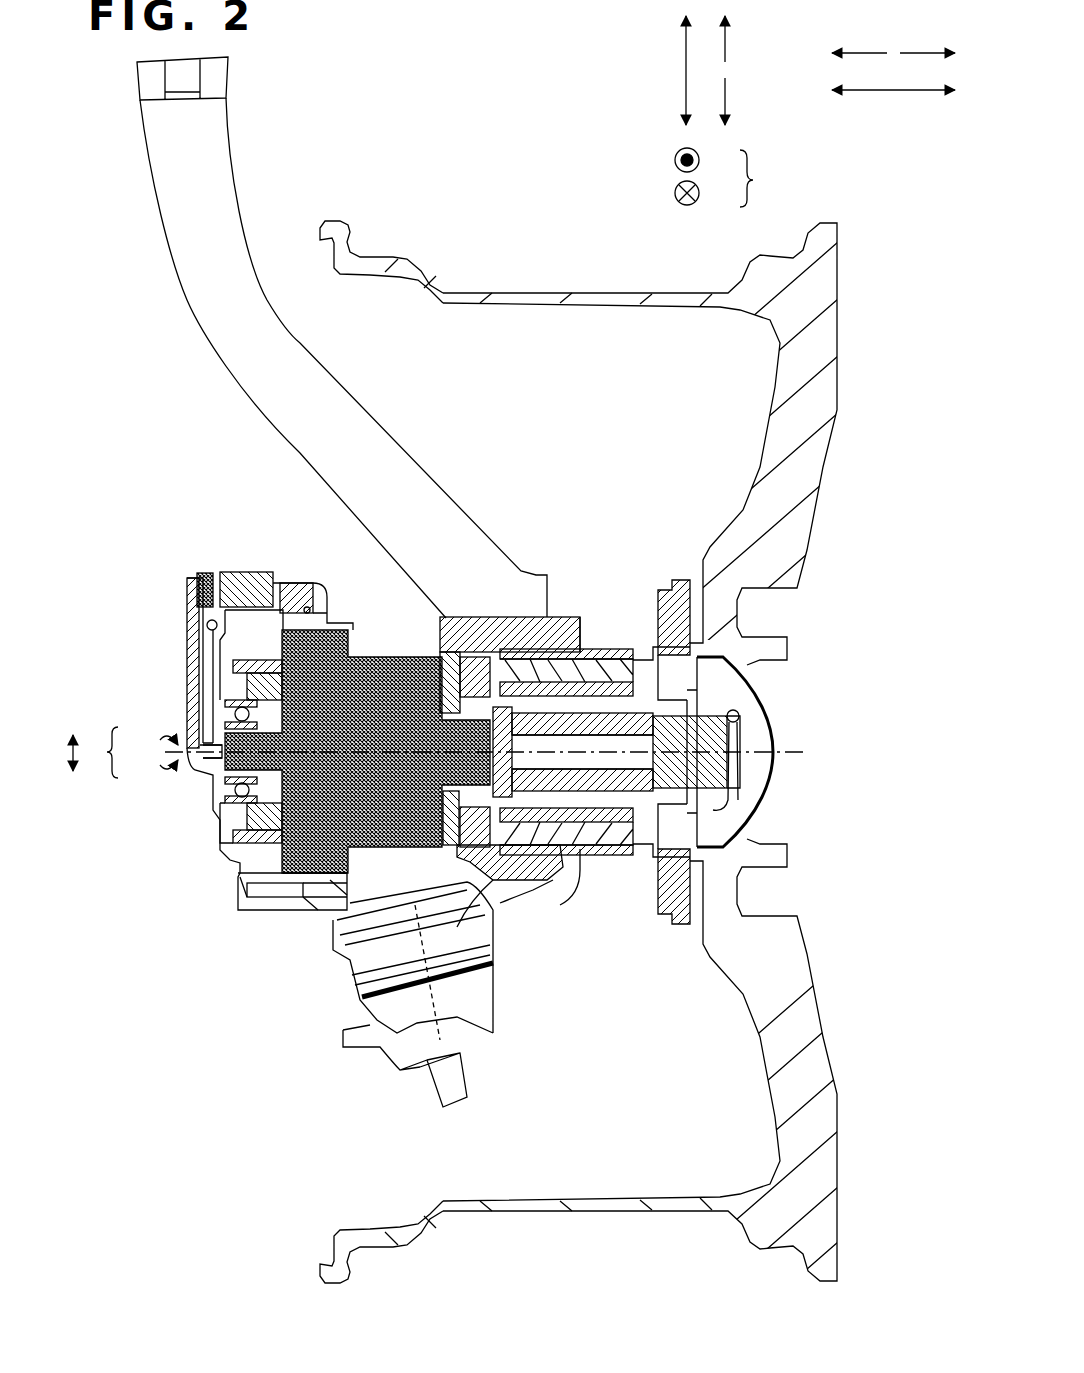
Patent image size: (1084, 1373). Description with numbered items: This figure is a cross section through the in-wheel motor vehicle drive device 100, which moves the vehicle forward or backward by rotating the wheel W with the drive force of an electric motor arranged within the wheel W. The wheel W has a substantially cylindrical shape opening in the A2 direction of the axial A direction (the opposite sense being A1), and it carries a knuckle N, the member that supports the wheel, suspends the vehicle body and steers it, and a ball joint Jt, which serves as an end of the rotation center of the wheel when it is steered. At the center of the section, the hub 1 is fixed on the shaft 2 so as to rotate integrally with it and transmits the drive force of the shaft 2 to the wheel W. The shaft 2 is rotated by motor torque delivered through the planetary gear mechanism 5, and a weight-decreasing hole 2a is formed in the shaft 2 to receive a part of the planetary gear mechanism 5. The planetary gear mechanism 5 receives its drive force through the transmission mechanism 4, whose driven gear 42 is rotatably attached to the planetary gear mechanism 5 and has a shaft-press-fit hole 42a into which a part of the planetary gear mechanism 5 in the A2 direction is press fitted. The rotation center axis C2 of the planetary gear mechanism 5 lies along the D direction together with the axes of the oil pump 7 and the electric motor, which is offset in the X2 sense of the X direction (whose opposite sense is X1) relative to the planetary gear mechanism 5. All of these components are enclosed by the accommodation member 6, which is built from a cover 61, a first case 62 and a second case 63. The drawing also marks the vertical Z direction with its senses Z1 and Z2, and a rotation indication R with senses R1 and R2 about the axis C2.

The in-wheel motor vehicle drive device 100 is at (150, 560).
The hub 1 is at (690, 677).
The shaft 2 is at (750, 723).
The weight-decreasing hole 2a is at (622, 738).
The transmission mechanism 4 is at (243, 652).
The planetary gear mechanism 5 is at (366, 632).
The accommodation member 6 is at (183, 612).
The oil pump 7 is at (222, 570).
The driven gear 42 is at (223, 660).
The shaft-press-fit hole 42a is at (193, 725).
The cover 61 is at (188, 641).
The first case 62 is at (310, 605).
The second case 63 is at (436, 618).
The knuckle N is at (213, 202).
The wheel W is at (827, 337).
The ball joint Jt is at (467, 982).
The rotation center axis of the planetary gear mechanism C2 is at (503, 754).
The D direction D is at (56, 753).
The rotation direction R is at (104, 752).
The rotation direction 1 R1 is at (149, 739).
The rotation direction 2 R2 is at (149, 764).
The vertical direction Z is at (699, 70).
The upward direction Z1 is at (743, 39).
The downward direction Z2 is at (743, 101).
The axial direction A is at (893, 79).
The axial direction outward A1 is at (927, 41).
The A2 direction A2 is at (859, 43).
The X direction X is at (758, 178).
The forward direction X1 is at (706, 162).
The X2 direction X2 is at (705, 194).